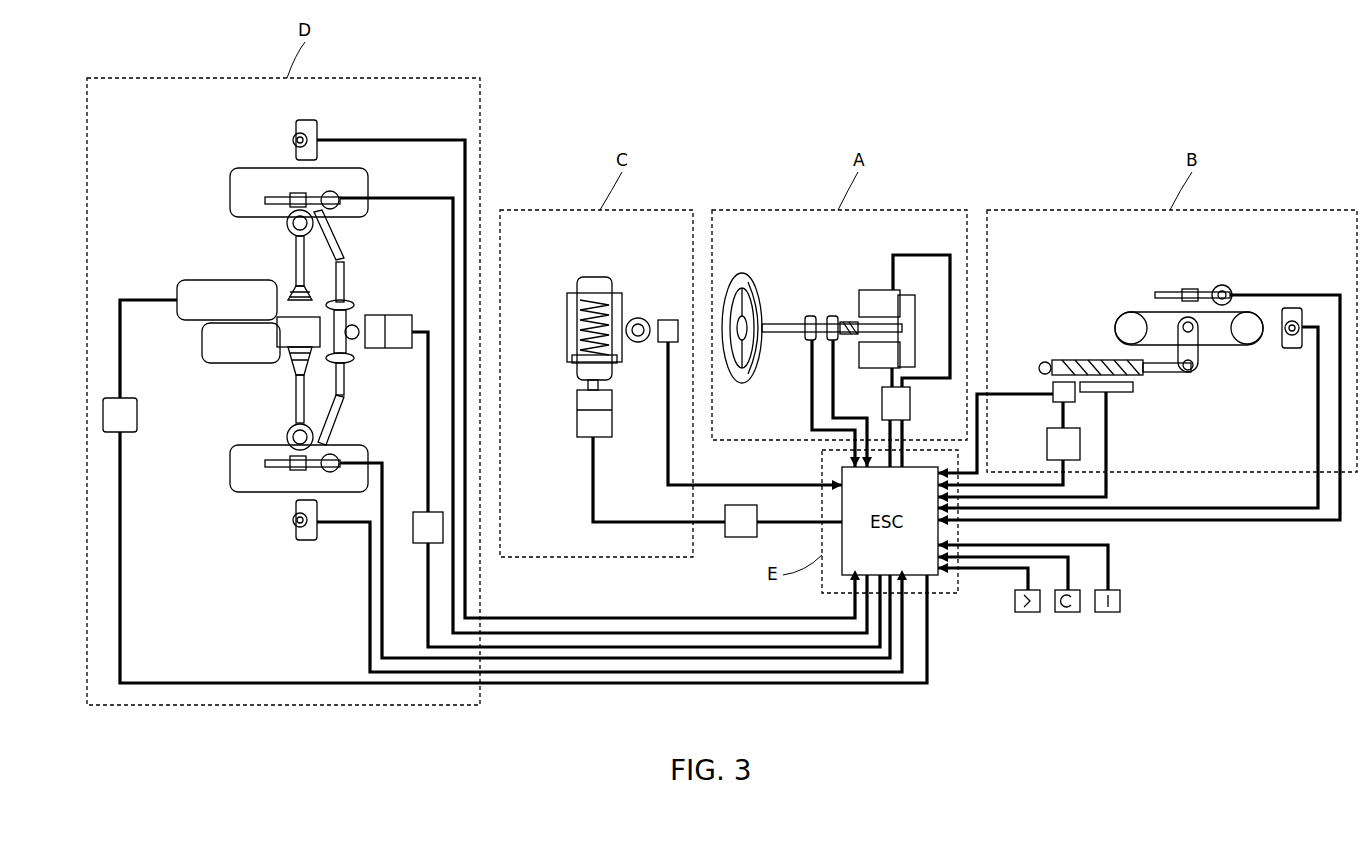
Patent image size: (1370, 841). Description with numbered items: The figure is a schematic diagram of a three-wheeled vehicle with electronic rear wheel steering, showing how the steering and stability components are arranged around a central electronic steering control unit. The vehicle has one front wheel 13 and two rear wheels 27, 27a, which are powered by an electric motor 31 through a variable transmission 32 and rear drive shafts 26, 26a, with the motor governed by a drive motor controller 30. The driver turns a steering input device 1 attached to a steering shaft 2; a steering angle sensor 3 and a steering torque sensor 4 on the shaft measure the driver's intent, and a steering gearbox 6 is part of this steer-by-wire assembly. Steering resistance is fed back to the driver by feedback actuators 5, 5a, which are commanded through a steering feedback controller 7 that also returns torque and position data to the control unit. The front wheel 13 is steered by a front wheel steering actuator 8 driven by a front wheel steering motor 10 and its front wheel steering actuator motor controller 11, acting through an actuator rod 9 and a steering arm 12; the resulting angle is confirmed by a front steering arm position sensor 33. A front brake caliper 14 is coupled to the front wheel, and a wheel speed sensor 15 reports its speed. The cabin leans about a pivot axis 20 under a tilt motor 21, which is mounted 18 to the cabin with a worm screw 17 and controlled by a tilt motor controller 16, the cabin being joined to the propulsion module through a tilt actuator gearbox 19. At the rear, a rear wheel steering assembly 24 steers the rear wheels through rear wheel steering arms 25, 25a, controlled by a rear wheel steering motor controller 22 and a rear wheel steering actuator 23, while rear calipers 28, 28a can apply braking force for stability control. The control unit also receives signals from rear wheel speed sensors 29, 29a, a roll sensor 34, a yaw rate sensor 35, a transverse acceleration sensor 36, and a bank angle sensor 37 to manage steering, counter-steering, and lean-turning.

The steering input device 1 is at (752, 282).
The steering shaft 2 is at (797, 334).
The steering angle sensor 3 is at (809, 316).
The steering torque sensor 4 is at (832, 316).
The feedback actuator 5 is at (880, 300).
The feedback actuator 5a is at (880, 358).
The steering gearbox 6 is at (910, 330).
The steering feedback controller 7 is at (897, 403).
The front wheel steering actuator 8 is at (1090, 360).
The actuator rod 9 is at (1162, 372).
The front wheel steering motor 10 is at (1053, 388).
The front wheel steering actuator motor controller 11 is at (1060, 445).
The steering arm 12 is at (1198, 352).
The front wheel 13 is at (1133, 312).
The front brake caliper 14 is at (1225, 285).
The wheel speed sensor 15 is at (1290, 350).
The tilt motor controller 16 is at (735, 522).
The worm screw 17 is at (596, 285).
The mount 18 is at (612, 320).
The tilt actuator gearbox 19 is at (572, 362).
The pivot axis 20 is at (566, 328).
The tilt motor 21 is at (577, 415).
The rear wheel steering motor controller 22 is at (420, 522).
The rear wheel steering actuator 23 is at (385, 315).
The rear wheel steering assembly 24 is at (350, 318).
The rear wheel steering arm 25 is at (345, 260).
The rear wheel steering arm 25a is at (342, 412).
The rear drive shaft 26 is at (296, 265).
The rear drive shaft 26a is at (294, 395).
The rear wheel 27 is at (230, 195).
The rear wheel 27a is at (230, 472).
The rear caliper 28 is at (338, 196).
The rear caliper 28a is at (340, 458).
The wheel speed sensor 29 is at (318, 130).
The wheel speed sensor 29a is at (306, 542).
The drive motor controller 30 is at (125, 415).
The electric motor 31 is at (200, 280).
The variable transmission 32 is at (205, 340).
The front steering arm position sensor 33 is at (1115, 395).
The roll sensor 34 is at (1022, 612).
The yaw rate sensor 35 is at (1068, 612).
The transverse acceleration sensor 36 is at (1108, 612).
The bank angle sensor 37 is at (668, 342).